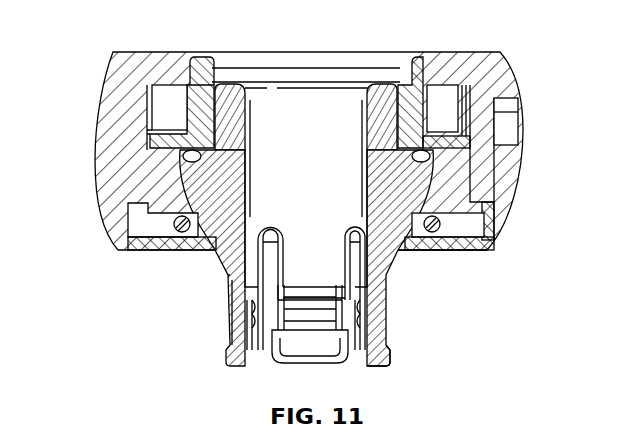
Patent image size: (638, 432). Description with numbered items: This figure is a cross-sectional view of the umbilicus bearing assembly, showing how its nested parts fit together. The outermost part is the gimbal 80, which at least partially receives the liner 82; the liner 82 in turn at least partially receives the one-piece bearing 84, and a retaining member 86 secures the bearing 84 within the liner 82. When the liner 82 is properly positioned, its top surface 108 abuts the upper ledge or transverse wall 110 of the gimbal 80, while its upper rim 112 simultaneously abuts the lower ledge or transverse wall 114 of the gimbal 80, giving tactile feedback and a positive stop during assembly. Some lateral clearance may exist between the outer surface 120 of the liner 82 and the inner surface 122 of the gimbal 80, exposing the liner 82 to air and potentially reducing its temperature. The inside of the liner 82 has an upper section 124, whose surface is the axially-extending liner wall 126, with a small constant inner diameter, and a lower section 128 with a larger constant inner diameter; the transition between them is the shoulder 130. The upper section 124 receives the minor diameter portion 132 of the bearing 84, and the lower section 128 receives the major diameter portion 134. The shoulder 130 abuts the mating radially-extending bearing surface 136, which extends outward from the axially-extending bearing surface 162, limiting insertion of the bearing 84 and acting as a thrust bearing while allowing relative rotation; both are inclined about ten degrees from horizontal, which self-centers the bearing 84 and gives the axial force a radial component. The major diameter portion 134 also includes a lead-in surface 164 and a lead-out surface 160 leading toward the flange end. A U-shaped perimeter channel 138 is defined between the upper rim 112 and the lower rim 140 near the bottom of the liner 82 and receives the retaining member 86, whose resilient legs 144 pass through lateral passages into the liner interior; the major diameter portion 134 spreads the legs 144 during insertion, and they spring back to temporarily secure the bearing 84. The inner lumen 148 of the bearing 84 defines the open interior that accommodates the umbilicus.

The gimbal 80 is at (90, 194).
The liner 82 is at (143, 256).
The one-piece bearing 84 is at (390, 336).
The retaining member 86 is at (590, 431).
The top surface 108 is at (150, 103).
The upper ledge or transverse wall 110 is at (192, 58).
The upper rim 112 is at (482, 228).
The lower ledge or transverse wall 114 is at (130, 214).
The outer surface 120 is at (150, 146).
The inner surface 122 is at (457, 152).
The upper section 124 is at (187, 78).
The axially-extending liner wall 126 is at (220, 115).
The lower section 128 is at (480, 193).
The shoulder 130 is at (188, 160).
The minor diameter portion 132 is at (382, 112).
The major diameter portion 134 is at (182, 156).
The radially-extending bearing surface 136 is at (428, 118).
The channel 138 is at (492, 225).
The lower rim 140 is at (503, 246).
The legs 144 is at (184, 233).
The inner lumen 148 is at (331, 207).
The lead-out surface 160 is at (394, 262).
The axially-extending bearing surface 162 is at (402, 145).
The lead-in surface 164 is at (465, 176).